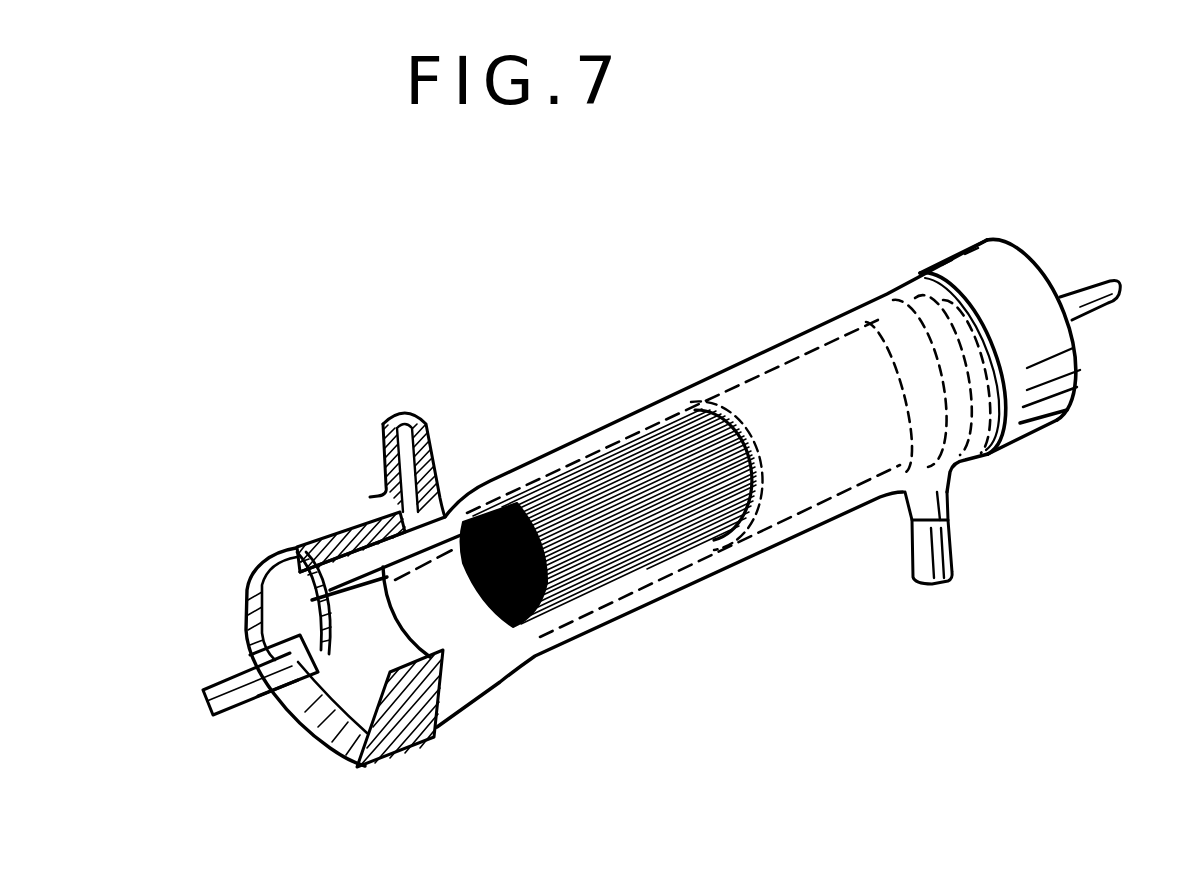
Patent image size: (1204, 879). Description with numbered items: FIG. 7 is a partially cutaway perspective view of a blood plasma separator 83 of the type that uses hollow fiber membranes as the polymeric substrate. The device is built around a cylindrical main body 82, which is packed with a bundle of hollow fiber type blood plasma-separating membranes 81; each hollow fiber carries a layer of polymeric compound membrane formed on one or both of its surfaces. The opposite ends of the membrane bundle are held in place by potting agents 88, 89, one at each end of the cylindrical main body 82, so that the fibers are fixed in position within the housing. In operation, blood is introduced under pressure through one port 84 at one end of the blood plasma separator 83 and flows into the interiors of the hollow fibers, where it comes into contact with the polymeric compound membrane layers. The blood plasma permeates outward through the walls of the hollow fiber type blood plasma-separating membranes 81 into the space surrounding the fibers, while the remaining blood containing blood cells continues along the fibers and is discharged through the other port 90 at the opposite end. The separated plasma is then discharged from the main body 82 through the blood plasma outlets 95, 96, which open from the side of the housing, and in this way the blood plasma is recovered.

The hollow fiber type blood plasma-separating membranes 81 is at (663, 533).
The cylindrical main body 82 is at (795, 508).
The blood plasma separator 83 is at (701, 357).
The port 84 is at (262, 700).
The potting agent 88 is at (337, 540).
The potting agent 89 is at (893, 322).
The port 90 is at (1106, 308).
The blood plasma outlet 95 is at (950, 502).
The blood plasma outlet 96 is at (427, 443).